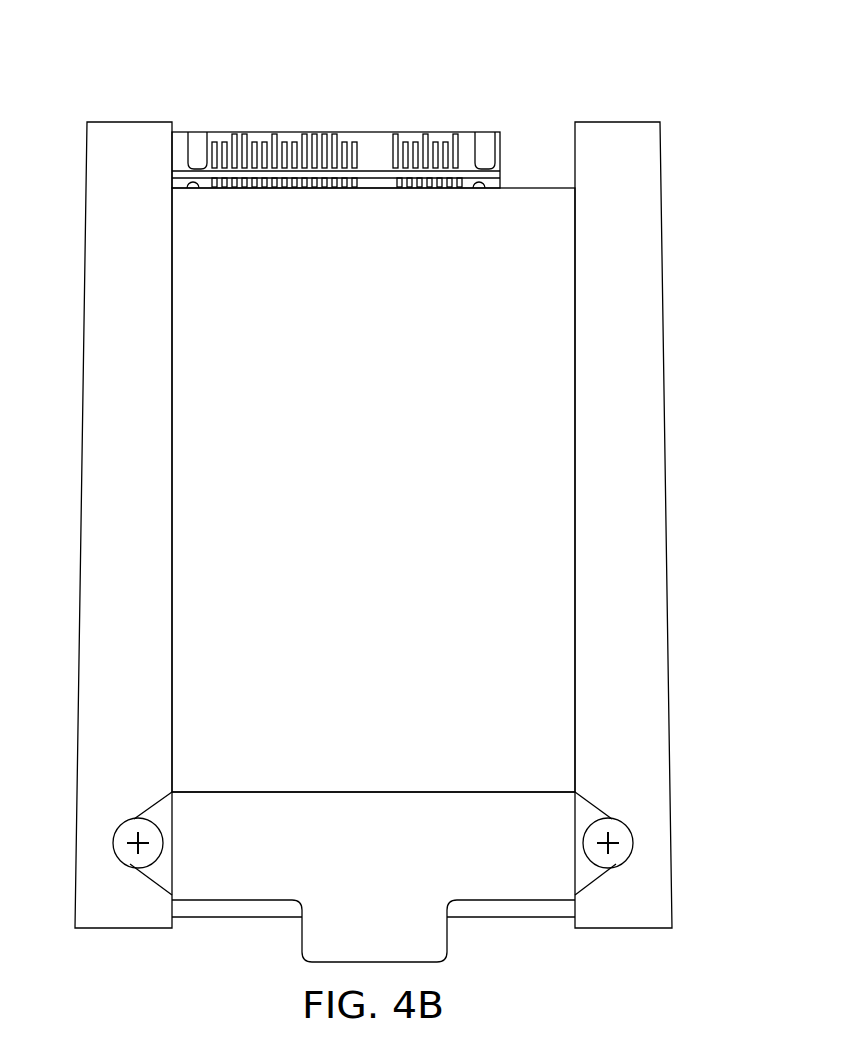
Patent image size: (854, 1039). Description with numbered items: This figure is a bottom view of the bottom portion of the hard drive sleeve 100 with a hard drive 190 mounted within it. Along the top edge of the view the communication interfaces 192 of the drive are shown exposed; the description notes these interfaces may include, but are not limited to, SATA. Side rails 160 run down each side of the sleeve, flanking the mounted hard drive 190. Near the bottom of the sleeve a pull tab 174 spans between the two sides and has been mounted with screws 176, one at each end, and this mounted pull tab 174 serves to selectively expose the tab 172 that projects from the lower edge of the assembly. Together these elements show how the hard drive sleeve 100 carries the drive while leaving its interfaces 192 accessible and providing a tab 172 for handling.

The hard drive sleeve 100 is at (483, 82).
The side rails 160 is at (149, 541).
The tab 172 is at (309, 933).
The pull tab 174 is at (396, 862).
The screws 176 is at (158, 818).
The hard drive 190 is at (395, 507).
The communication interfaces 192 is at (283, 189).